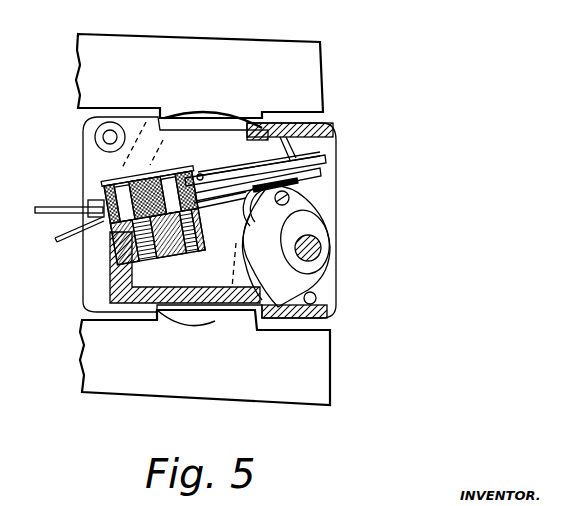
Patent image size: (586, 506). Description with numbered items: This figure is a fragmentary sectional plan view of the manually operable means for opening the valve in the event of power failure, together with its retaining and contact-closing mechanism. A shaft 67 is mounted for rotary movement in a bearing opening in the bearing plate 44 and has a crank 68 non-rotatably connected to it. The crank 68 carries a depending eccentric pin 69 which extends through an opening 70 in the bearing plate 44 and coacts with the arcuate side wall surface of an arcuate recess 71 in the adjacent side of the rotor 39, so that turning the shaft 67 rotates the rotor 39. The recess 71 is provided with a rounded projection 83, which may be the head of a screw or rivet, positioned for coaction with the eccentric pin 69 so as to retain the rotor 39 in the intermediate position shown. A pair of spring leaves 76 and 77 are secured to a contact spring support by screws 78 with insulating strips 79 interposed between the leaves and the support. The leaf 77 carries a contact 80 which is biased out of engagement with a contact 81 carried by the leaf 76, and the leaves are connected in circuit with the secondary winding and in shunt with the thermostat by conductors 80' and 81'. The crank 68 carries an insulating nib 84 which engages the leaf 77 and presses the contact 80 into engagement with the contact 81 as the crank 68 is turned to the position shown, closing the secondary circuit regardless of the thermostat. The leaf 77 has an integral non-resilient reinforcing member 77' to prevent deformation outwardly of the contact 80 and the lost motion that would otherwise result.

The bearing plate 44 is at (92, 277).
The spring leaf 76 is at (220, 172).
The opening 70 is at (248, 304).
The screws 78 is at (120, 176).
The insulating strips 79 is at (200, 175).
The conductor 81' is at (69, 198).
The conductor 80' is at (62, 231).
The reinforcing member 77' is at (282, 169).
The insulating nib 84 is at (296, 190).
The spring leaf 77 is at (239, 205).
The arcuate recess 71 is at (262, 212).
The contact 80 is at (299, 152).
The contact 81 is at (259, 161).
The crank 68 is at (322, 218).
The eccentric pin 69 is at (290, 200).
The shaft 67 is at (322, 246).
The rounded projection 83 is at (248, 238).
The rotor 39 is at (250, 262).